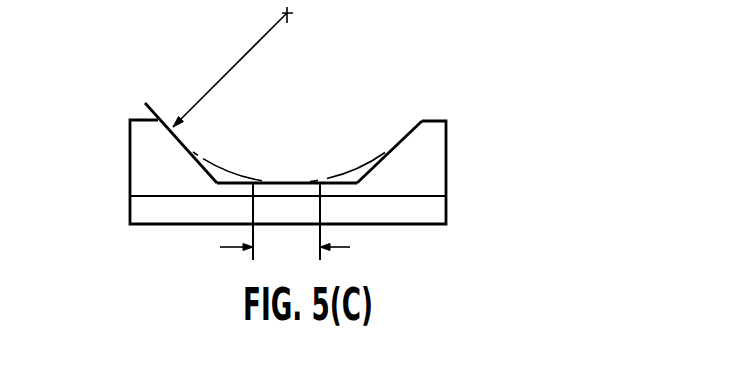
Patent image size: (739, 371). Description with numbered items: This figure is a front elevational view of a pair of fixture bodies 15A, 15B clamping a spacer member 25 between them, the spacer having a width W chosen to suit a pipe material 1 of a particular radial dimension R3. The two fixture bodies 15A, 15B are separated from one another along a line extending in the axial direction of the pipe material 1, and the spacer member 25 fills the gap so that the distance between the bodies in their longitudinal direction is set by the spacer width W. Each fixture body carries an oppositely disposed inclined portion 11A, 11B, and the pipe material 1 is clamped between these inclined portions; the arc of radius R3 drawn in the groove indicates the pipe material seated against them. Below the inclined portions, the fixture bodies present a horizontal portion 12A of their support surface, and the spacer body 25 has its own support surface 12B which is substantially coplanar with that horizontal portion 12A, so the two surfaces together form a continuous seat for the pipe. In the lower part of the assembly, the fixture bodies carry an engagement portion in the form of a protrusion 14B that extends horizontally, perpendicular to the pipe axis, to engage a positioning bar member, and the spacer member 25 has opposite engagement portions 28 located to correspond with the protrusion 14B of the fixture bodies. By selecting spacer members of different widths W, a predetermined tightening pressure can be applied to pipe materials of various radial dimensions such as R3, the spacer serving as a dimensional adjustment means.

The pipe material 1 is at (375, 154).
The inclined portion 11A is at (203, 162).
The inclined portion 11B is at (411, 131).
The horizontal portion of the support surface 12A is at (228, 183).
The support surface of the spacer body 12B is at (298, 180).
The protrusion 14B is at (421, 209).
The fixture body 15A is at (140, 162).
The fixture body 15B is at (428, 162).
The spacer member 25 is at (265, 215).
The engagement portion 28 is at (262, 205).
The width of spacer member W is at (285, 248).
The radial dimension of pipe material R3 is at (230, 72).